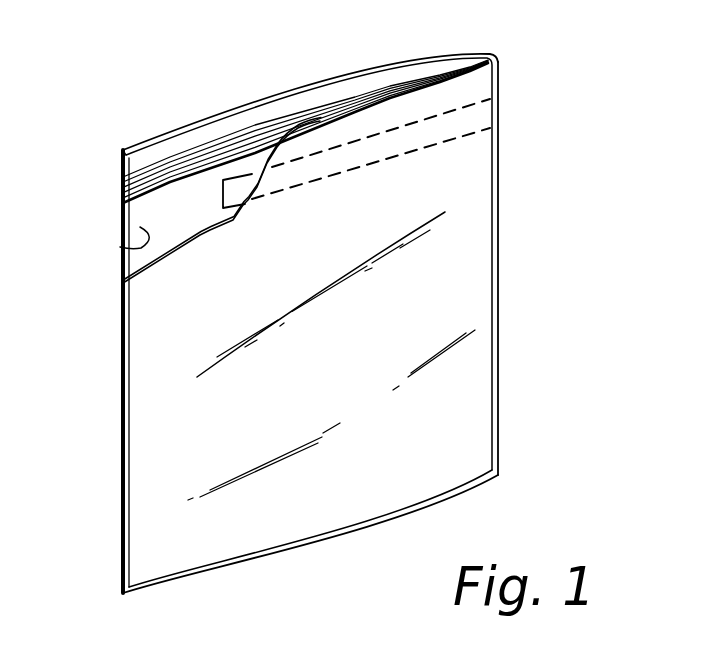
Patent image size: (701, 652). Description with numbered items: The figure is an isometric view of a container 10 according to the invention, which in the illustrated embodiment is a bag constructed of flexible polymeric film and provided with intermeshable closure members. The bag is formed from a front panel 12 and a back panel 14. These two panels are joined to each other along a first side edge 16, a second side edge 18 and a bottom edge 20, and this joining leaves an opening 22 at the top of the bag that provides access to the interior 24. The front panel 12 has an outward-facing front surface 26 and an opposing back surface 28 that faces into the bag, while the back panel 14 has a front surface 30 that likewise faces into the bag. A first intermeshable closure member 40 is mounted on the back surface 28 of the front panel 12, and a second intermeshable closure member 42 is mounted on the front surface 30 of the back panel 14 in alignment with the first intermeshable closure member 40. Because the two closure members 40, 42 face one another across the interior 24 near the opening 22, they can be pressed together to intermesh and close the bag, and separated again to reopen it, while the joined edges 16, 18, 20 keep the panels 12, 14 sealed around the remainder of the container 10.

The container 10 is at (223, 58).
The front panel 12 is at (477, 422).
The back panel 14 is at (122, 163).
The side edge 16 is at (120, 482).
The side edge 18 is at (500, 357).
The bottom edge 20 is at (323, 545).
The opening 22 is at (357, 82).
The interior 24 is at (125, 246).
The front surface 26 is at (178, 558).
The back surface 28 is at (144, 272).
The front surface 30 is at (147, 213).
The first intermeshable closure member 40 is at (243, 193).
The second intermeshable closure member 42 is at (184, 162).